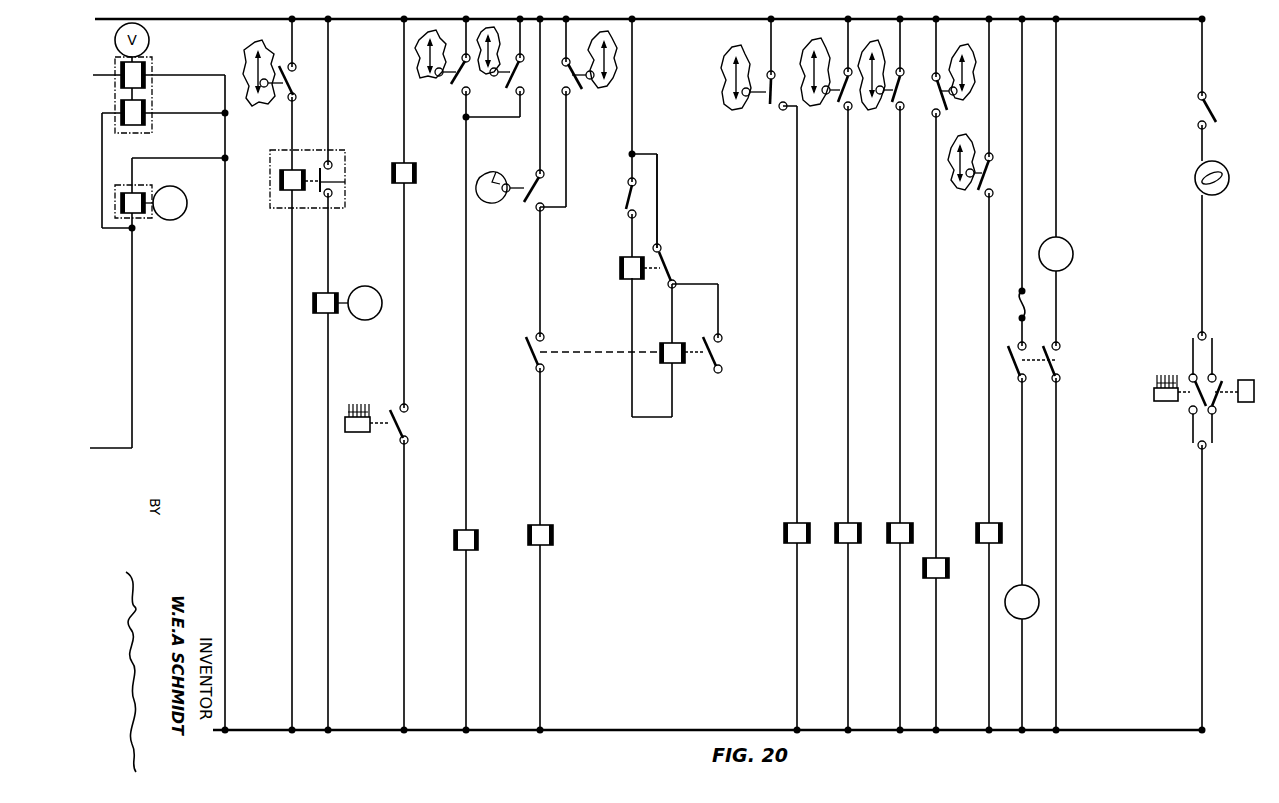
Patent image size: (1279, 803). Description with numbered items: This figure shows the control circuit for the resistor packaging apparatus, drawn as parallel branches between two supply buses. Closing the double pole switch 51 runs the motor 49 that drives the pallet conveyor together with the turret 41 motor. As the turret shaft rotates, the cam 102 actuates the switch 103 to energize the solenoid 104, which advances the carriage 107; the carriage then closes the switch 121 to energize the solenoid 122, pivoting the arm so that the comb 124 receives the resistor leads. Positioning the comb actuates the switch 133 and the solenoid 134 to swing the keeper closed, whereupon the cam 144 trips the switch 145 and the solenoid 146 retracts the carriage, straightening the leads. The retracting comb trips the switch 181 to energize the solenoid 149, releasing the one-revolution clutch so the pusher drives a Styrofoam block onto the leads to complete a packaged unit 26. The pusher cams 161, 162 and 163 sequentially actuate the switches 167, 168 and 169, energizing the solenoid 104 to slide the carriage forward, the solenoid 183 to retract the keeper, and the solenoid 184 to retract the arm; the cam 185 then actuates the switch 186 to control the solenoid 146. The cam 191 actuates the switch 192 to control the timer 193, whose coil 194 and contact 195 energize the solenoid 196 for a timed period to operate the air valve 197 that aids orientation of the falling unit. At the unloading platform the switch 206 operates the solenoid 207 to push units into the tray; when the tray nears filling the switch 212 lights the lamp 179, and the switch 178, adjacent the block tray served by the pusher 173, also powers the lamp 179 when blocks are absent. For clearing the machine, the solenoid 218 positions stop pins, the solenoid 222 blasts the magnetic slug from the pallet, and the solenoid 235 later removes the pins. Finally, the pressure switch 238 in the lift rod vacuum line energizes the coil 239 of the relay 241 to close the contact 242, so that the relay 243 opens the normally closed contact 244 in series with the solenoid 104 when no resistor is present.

The packaged unit 26 is at (360, 432).
The turret 41 is at (1029, 588).
The motor 49 is at (1048, 238).
The double pole switch 51 is at (1010, 362).
The cam 102 is at (490, 174).
The switch 103 is at (547, 190).
The solenoid 104 is at (541, 525).
The carriage 107 is at (812, 106).
The switch 121 is at (851, 108).
The solenoid 122 is at (848, 523).
The comb 124 is at (954, 48).
The switch 133 is at (948, 108).
The solenoid 134 is at (936, 558).
The cam 144 is at (430, 42).
The switch 145 is at (473, 74).
The solenoid 146 is at (460, 530).
The solenoid 149 is at (989, 523).
The cam 161 is at (601, 90).
The cam 162 is at (869, 42).
The cam 163 is at (733, 110).
The switch 167 is at (563, 76).
The switch 168 is at (898, 88).
The switch 169 is at (776, 92).
The pusher 173 is at (1246, 402).
The switch 178 is at (1221, 380).
The warning lamp 179 is at (1226, 174).
The switch 181 is at (989, 184).
The solenoid 183 is at (900, 523).
The solenoid 184 is at (797, 523).
The cam 185 is at (488, 40).
The switch 186 is at (527, 74).
The cam 191 is at (250, 104).
The switch 192 is at (297, 85).
The timer 193 is at (338, 158).
The coil 194 is at (280, 181).
The contact 195 is at (338, 179).
The solenoid 196 is at (326, 313).
The air valve 197 is at (358, 288).
The switch 206 is at (402, 422).
The solenoid 207 is at (408, 163).
The switch 212 is at (1196, 376).
The solenoid 218 is at (145, 108).
The solenoid 222 is at (134, 193).
The solenoid 235 is at (145, 72).
The pressure switch 238 is at (617, 198).
The coil 239 is at (620, 269).
The relay 241 is at (641, 246).
The contact 242 is at (673, 264).
The relay 243 is at (668, 343).
The normally closed contact 244 is at (524, 348).